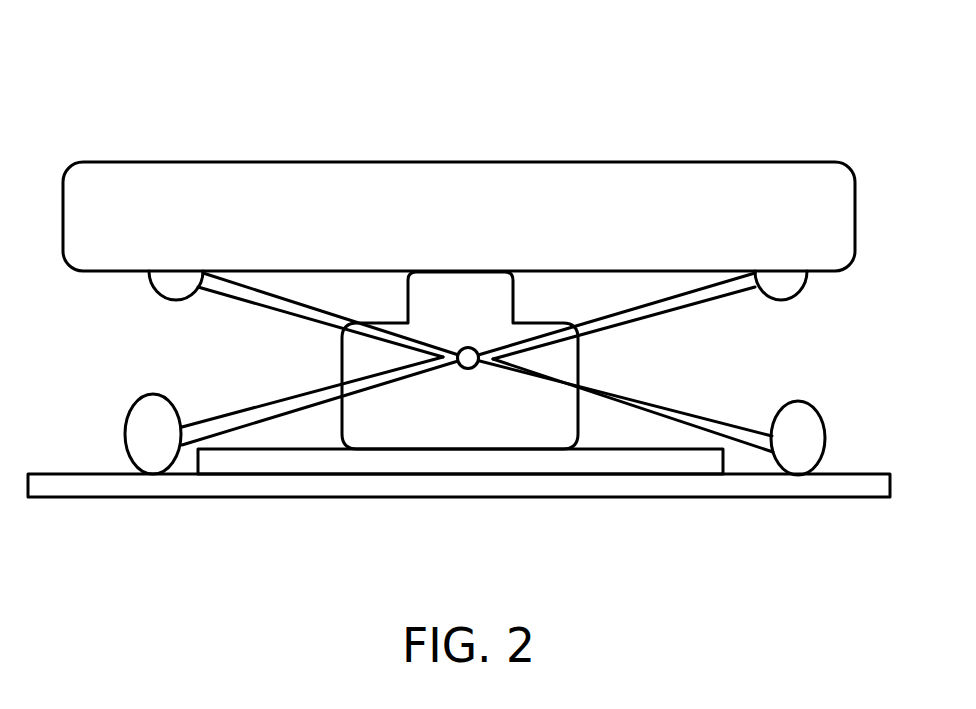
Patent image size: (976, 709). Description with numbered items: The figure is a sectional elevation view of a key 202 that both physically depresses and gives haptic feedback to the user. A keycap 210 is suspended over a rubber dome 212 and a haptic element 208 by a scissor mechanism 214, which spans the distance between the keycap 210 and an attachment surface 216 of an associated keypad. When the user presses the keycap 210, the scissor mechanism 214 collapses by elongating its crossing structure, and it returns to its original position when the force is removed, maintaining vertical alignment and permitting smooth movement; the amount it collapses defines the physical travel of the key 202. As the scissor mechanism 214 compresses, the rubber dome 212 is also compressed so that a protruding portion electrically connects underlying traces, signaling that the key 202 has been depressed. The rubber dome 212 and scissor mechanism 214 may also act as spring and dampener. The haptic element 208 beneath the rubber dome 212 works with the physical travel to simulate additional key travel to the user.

The key 202 is at (189, 71).
The keycap 210 is at (459, 216).
The rubber dome 212 is at (460, 360).
The scissor mechanism 214 is at (658, 317).
The haptic element 208 is at (665, 450).
The attachment surface 216 is at (843, 475).